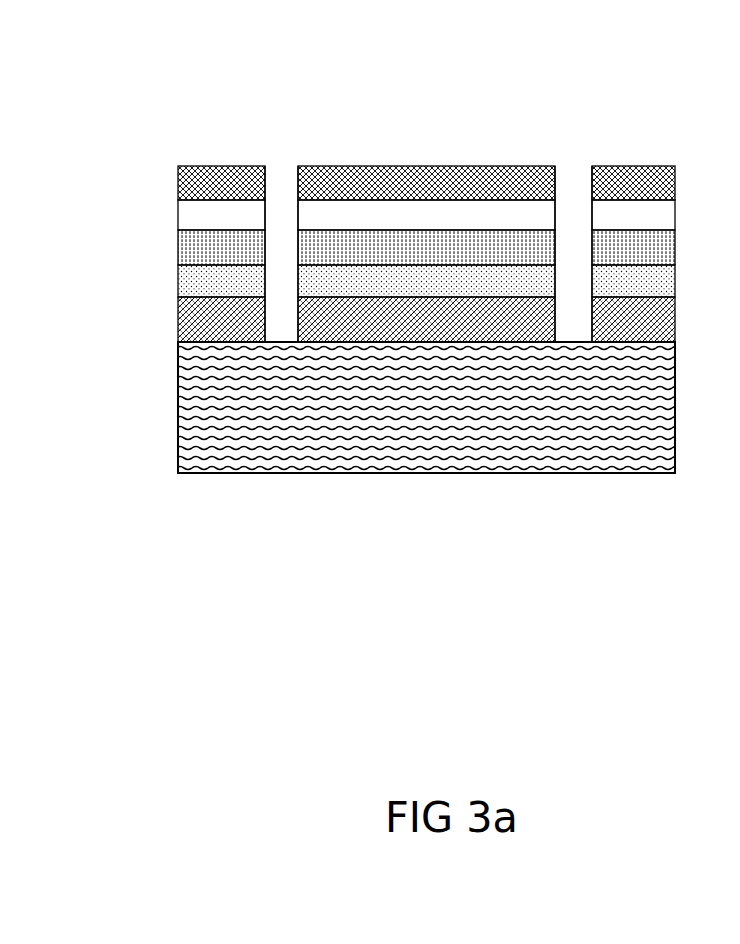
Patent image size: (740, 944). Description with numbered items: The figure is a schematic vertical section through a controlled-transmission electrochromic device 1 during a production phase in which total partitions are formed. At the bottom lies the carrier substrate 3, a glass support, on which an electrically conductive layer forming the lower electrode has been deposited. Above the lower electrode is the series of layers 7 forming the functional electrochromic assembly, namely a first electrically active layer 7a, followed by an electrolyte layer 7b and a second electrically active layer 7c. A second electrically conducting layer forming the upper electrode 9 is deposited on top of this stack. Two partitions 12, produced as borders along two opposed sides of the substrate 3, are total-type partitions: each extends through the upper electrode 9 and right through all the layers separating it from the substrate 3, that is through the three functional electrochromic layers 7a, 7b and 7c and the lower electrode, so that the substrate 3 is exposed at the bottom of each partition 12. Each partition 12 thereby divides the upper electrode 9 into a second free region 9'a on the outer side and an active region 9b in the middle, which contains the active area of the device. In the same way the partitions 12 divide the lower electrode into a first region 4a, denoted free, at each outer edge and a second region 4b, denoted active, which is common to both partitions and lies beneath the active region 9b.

The controlled-transmission electrochromic device 1 is at (462, 142).
The carrier substrate 3 is at (496, 442).
The first region of the lower electrode 4a is at (186, 325).
The second region of the lower electrode 4b is at (392, 310).
The series of layers 7 is at (411, 243).
The first electrically active layer 7a is at (203, 282).
The electrolyte layer 7b is at (210, 253).
The second electrically active layer 7c is at (203, 215).
The upper electrode 9 is at (439, 304).
The second free region of the upper electrode 9'a is at (438, 134).
The active region of the upper electrode 9b is at (393, 166).
The partitions 12 is at (282, 188).